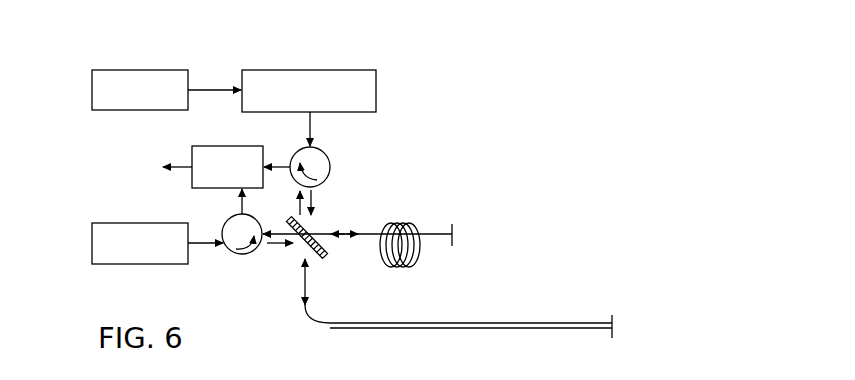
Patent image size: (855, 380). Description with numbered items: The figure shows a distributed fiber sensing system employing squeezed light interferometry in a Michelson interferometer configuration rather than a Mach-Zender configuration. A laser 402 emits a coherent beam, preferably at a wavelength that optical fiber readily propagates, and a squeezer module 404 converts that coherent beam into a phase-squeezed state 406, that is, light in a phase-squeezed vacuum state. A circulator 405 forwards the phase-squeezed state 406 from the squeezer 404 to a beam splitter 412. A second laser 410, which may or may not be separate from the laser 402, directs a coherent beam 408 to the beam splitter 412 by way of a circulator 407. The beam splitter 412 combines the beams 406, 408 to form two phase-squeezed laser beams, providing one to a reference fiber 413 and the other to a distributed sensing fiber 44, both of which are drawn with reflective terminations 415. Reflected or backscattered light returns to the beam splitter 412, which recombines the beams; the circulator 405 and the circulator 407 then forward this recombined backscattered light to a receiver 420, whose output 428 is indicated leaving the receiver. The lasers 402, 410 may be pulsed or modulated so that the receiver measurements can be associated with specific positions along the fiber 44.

The laser 402 is at (131, 111).
The squeezer module 404 is at (343, 113).
The circulator 405 is at (329, 161).
The phase-squeezed state 406 is at (314, 212).
The circulator 407 is at (243, 254).
The coherent beam 408 is at (277, 247).
The laser 410 is at (128, 264).
The beam splitter 412 is at (318, 251).
The reference fiber 413 is at (402, 270).
The reflective terminations 415 is at (456, 230).
The receiver 420 is at (224, 190).
The receiver output 428 is at (167, 178).
The distributed sensing fiber 44 is at (427, 330).